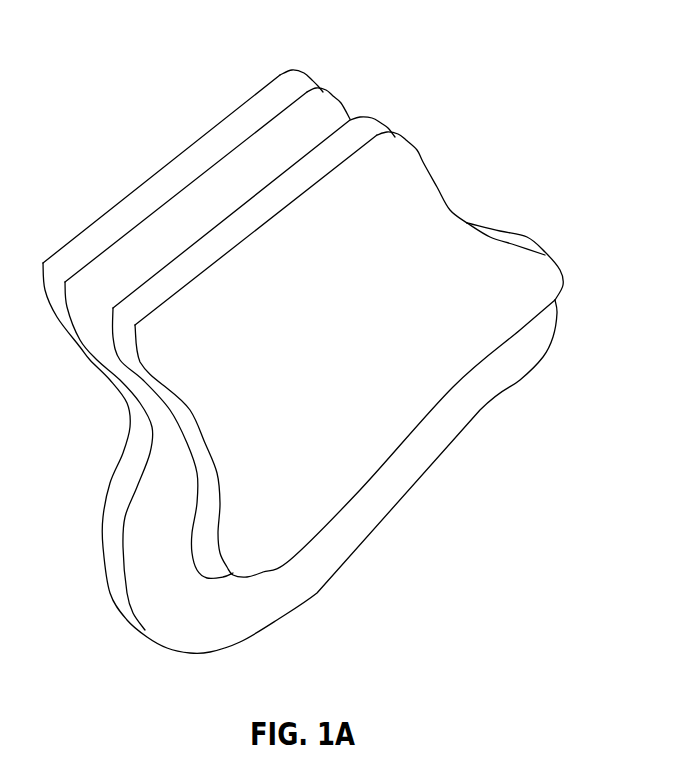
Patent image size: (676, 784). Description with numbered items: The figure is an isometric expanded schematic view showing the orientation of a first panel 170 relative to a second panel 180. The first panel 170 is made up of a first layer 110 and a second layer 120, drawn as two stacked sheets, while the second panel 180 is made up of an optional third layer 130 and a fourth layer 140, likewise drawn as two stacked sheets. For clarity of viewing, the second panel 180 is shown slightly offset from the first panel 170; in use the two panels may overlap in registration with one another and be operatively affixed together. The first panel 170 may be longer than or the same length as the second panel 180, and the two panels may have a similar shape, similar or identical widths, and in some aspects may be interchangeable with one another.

The first layer 110 is at (285, 87).
The second layer 120 is at (315, 113).
The third layer 130 is at (352, 130).
The fourth layer 140 is at (399, 169).
The first panel 170 is at (300, 337).
The second panel 180 is at (337, 330).